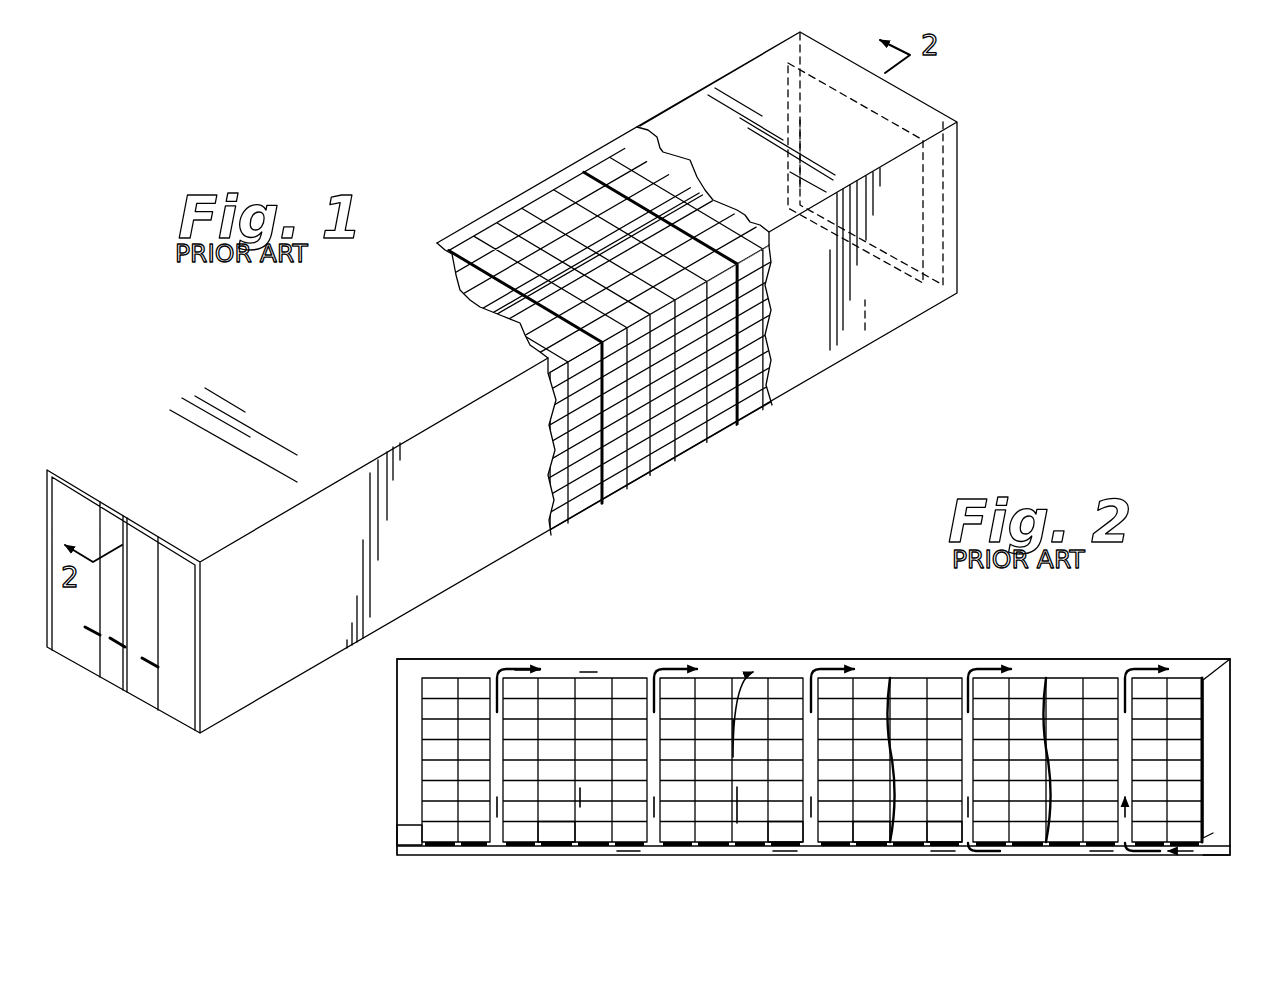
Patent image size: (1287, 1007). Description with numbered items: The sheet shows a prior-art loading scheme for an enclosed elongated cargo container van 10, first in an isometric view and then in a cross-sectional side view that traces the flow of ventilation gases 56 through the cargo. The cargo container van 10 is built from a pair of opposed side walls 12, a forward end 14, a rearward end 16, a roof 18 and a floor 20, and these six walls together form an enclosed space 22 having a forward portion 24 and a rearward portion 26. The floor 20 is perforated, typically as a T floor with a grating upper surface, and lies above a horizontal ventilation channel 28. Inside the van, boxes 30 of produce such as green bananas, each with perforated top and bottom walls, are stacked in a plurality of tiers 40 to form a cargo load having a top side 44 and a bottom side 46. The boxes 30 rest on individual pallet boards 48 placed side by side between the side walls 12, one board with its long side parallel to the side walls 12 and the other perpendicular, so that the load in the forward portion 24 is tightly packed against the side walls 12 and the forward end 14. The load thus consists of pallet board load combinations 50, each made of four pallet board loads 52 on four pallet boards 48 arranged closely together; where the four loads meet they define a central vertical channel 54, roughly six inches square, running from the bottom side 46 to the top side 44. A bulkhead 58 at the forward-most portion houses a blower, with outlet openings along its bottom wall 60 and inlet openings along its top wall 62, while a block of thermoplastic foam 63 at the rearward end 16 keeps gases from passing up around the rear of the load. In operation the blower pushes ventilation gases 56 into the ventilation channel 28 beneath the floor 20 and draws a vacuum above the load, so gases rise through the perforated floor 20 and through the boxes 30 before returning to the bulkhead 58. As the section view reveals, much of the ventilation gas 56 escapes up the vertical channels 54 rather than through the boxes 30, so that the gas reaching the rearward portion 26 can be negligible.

In FIG. 1, the cargo container van 10 is at (920, 322).
In FIG. 2, the cargo container van 10 is at (470, 659).
In FIG. 1, the side walls 12 is at (495, 542).
In FIG. 1, the forward end 14 is at (950, 243).
In FIG. 2, the forward end 14 is at (1233, 760).
In FIG. 1, the rearward end 16 is at (180, 697).
In FIG. 2, the rearward end 16 is at (397, 762).
In FIG. 1, the roof 18 is at (133, 447).
In FIG. 2, the roof 18 is at (716, 657).
In FIG. 1, the floor 20 is at (865, 330).
In FIG. 2, the floor 20 is at (405, 855).
In FIG. 2, the enclosed space 22 is at (779, 670).
In FIG. 2, the forward portion 24 is at (1095, 668).
In FIG. 2, the rearward portion 26 is at (563, 672).
In FIG. 2, the horizontal ventilation channel 28 is at (690, 850).
In FIG. 1, the boxes 30 is at (695, 433).
In FIG. 2, the boxes 30 is at (865, 832).
In FIG. 1, the tiers 40 is at (637, 465).
In FIG. 2, the tiers 40 is at (790, 832).
In FIG. 2, the top side 44 is at (942, 672).
In FIG. 2, the bottom side 46 is at (955, 848).
In FIG. 2, the pallet boards 48 is at (473, 846).
In FIG. 1, the pallet board load combination 50 is at (585, 195).
In FIG. 1, the pallet board loads 52 is at (633, 170).
In FIG. 2, the pallet board loads 52 is at (555, 832).
In FIG. 1, the central vertical channel 54 is at (676, 220).
In FIG. 2, the central vertical channel 54 is at (497, 682).
In FIG. 2, the ventilation gases 56 is at (1190, 855).
In FIG. 1, the bulkhead 58 is at (937, 180).
In FIG. 2, the bulkhead 58 is at (1218, 705).
In FIG. 2, the bottom wall of the bulkhead 60 is at (1220, 855).
In FIG. 1, the top wall of the bulkhead 62 is at (918, 128).
In FIG. 2, the top wall of the bulkhead 62 is at (1200, 662).
In FIG. 2, the block of thermoplastic foam 63 is at (410, 838).